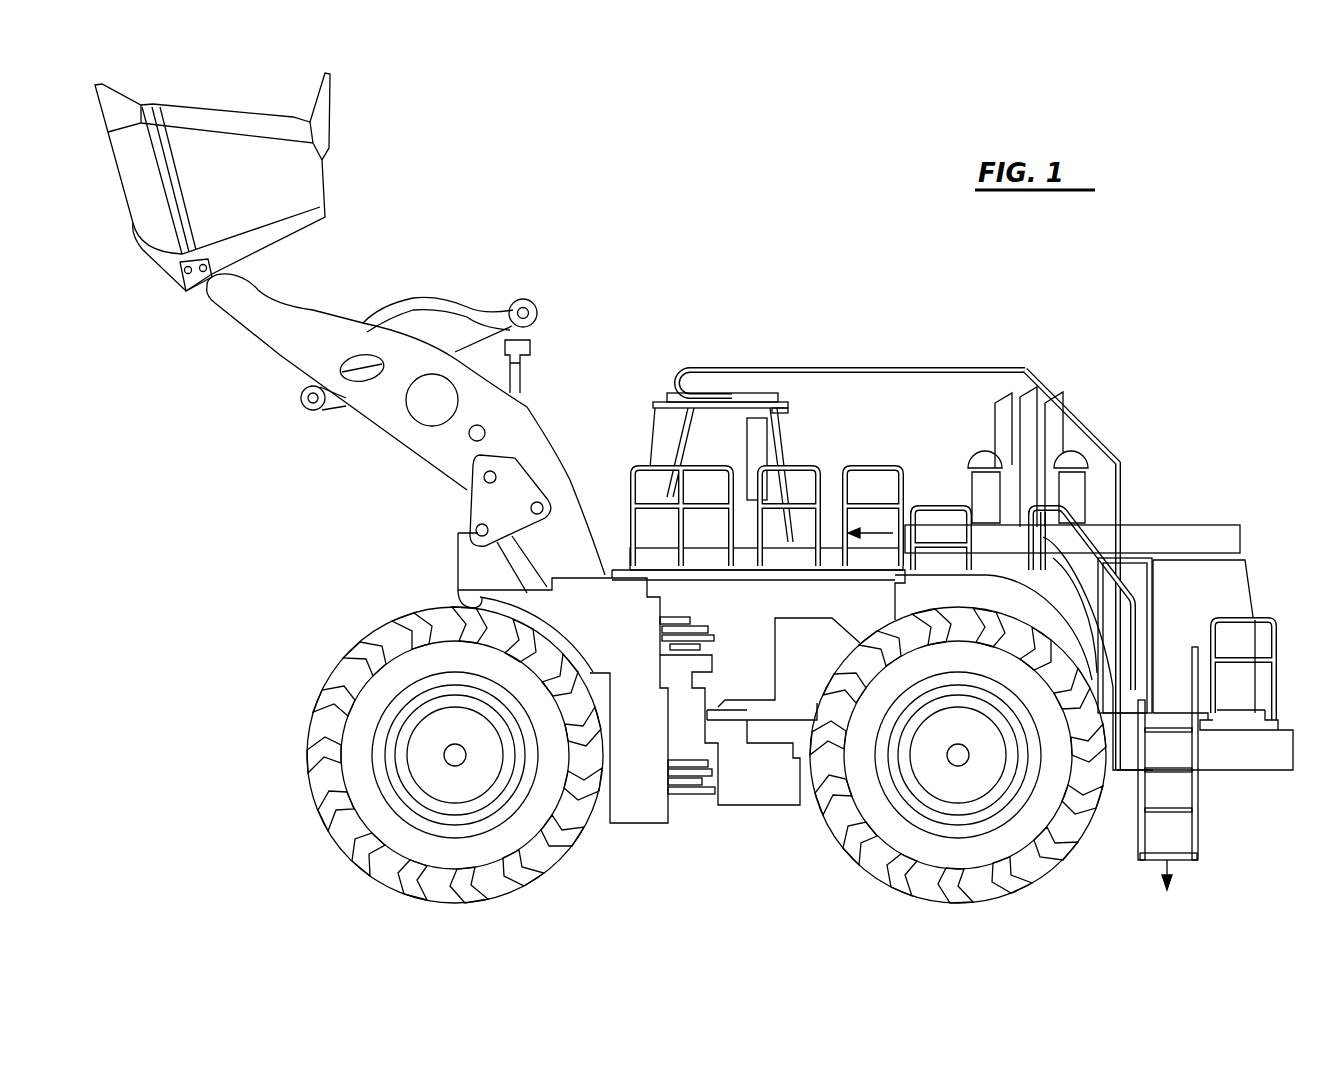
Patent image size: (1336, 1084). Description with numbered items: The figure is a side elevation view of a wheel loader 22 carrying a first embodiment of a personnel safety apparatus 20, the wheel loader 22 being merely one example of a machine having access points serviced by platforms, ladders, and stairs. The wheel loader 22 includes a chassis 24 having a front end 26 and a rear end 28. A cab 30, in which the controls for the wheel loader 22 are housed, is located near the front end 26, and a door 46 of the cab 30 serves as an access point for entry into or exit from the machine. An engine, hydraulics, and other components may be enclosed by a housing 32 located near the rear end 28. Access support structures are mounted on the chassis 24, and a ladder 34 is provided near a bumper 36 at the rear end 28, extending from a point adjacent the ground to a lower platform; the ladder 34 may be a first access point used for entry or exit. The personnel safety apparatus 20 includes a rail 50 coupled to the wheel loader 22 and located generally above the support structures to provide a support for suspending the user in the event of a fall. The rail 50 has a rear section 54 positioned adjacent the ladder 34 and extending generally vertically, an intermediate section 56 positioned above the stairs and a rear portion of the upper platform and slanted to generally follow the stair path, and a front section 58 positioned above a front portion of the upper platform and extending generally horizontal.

The personnel safety apparatus 20 is at (1103, 355).
The wheel loader 22 is at (606, 845).
The chassis 24 is at (695, 804).
The front end 26 is at (460, 592).
The rear end 28 is at (1234, 686).
The cab 30 is at (774, 398).
The housing 32 is at (1190, 528).
The ladder 34 is at (1137, 760).
The bumper 36 is at (1254, 748).
The door 46 is at (760, 437).
The rail 50 is at (937, 362).
The rear section 54 is at (1127, 540).
The intermediate section 56 is at (1093, 427).
The front section 58 is at (737, 367).